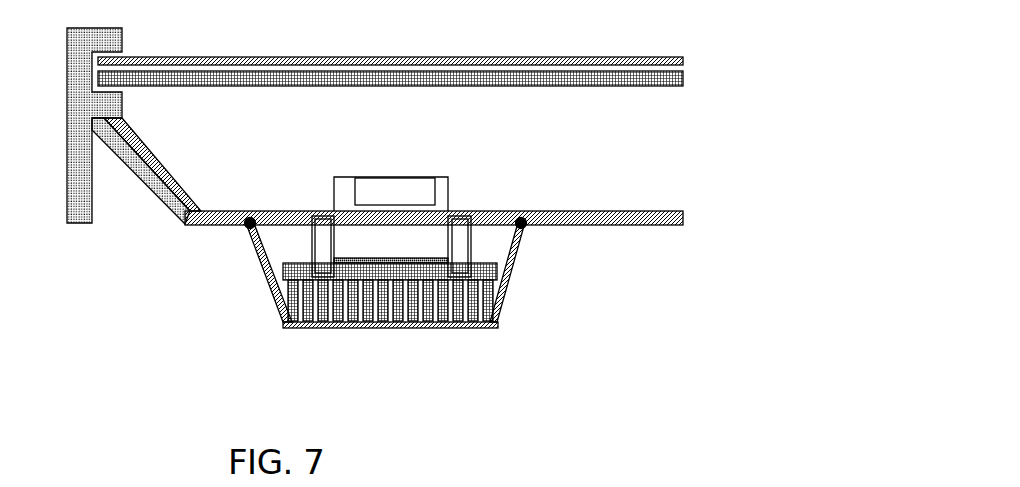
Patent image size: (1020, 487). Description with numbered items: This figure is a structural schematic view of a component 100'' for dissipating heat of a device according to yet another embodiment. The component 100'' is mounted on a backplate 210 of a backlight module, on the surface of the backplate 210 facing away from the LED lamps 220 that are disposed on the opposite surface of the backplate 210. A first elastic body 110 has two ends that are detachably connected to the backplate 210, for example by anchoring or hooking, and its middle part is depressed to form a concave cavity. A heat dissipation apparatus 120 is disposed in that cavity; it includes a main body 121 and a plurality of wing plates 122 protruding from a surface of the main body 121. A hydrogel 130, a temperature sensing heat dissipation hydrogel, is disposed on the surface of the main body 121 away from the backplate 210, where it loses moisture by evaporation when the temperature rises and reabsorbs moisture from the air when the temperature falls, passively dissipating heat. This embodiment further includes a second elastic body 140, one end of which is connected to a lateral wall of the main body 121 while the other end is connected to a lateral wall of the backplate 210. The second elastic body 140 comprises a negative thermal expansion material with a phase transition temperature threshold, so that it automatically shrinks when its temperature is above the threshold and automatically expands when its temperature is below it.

The component for dissipating heat of the device 100'' is at (386, 329).
The first elastic body 110 is at (290, 329).
The heat dissipation apparatus 120 is at (390, 331).
The main body 121 is at (373, 300).
The wing plates 122 is at (346, 305).
The hydrogel 130 is at (422, 278).
The second elastic body 140 is at (465, 268).
The backplate 210 is at (288, 211).
The LED lamps 220 is at (379, 182).